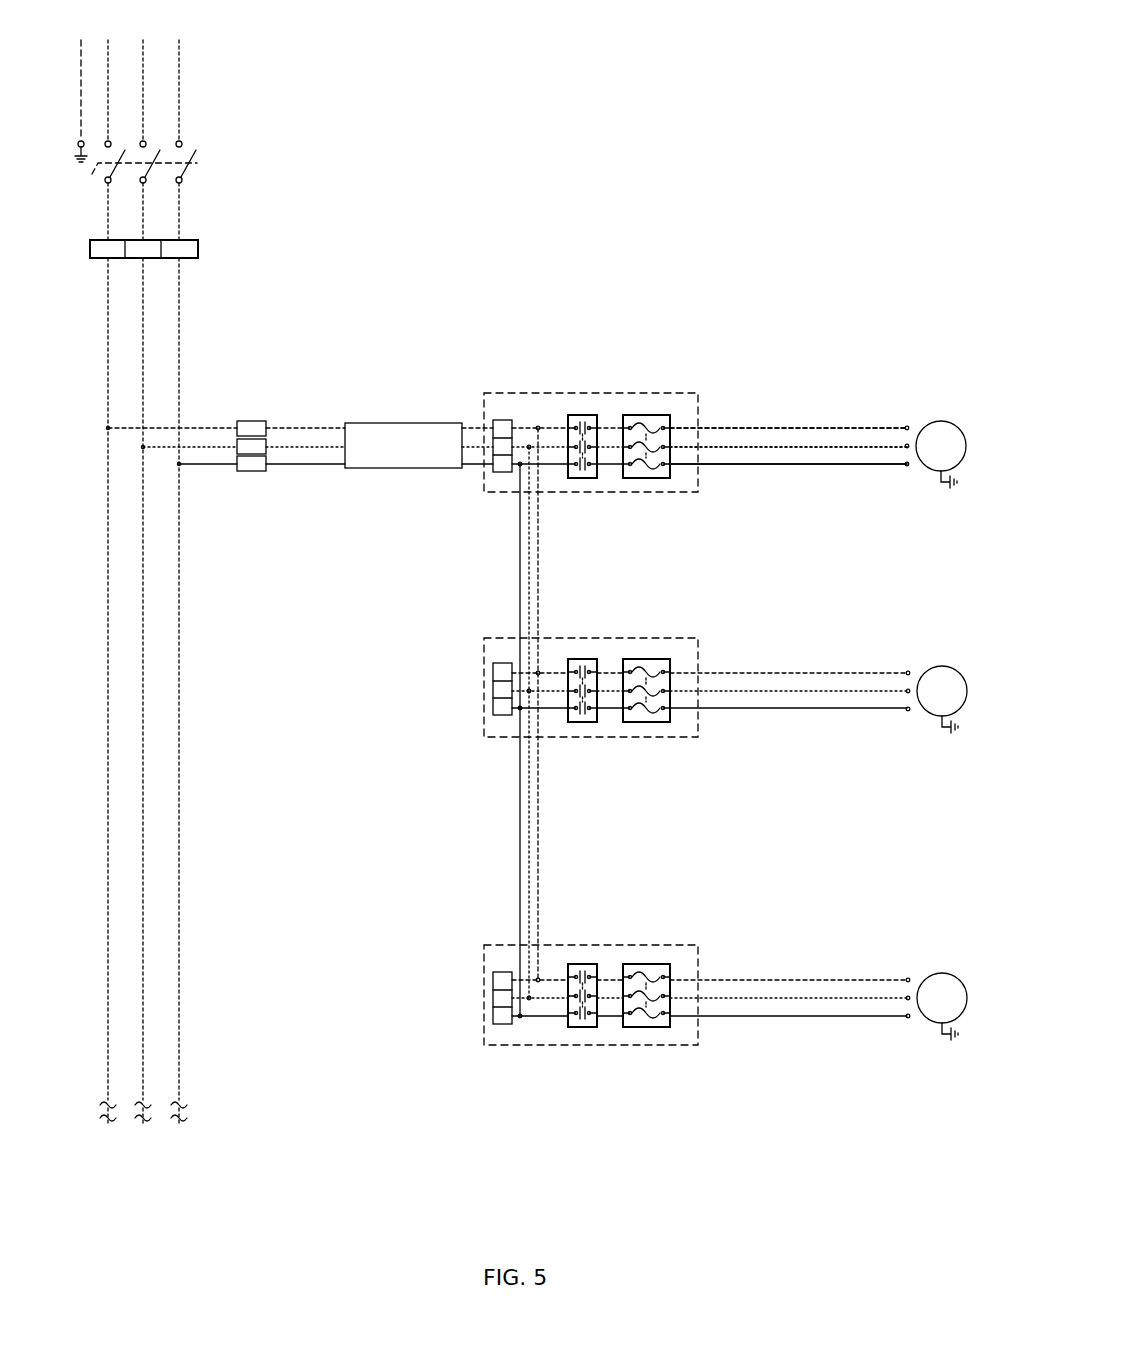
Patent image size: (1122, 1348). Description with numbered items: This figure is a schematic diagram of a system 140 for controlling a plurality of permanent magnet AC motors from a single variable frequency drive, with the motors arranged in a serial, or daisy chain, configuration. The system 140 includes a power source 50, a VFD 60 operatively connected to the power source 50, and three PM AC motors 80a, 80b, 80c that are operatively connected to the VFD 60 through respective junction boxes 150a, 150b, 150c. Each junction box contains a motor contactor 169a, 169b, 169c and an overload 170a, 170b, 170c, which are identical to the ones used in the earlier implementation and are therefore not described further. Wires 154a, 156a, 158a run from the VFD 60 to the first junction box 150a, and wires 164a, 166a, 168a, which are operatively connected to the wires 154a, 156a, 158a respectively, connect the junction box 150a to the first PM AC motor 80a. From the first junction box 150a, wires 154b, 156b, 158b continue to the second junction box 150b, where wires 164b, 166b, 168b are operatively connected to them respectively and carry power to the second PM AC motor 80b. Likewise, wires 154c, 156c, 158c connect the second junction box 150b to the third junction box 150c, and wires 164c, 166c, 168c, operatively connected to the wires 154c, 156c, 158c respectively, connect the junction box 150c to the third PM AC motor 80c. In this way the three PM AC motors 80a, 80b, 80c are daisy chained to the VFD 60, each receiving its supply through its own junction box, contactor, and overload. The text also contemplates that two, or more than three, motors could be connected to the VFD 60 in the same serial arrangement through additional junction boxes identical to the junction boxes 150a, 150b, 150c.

The system 140 is at (830, 76).
The power source 50 is at (203, 133).
The VFD 60 is at (399, 420).
The wire 154a is at (470, 420).
The wire 156a is at (478, 468).
The wire 158a is at (466, 468).
The wire 154b is at (540, 555).
The wire 156b is at (531, 522).
The wire 158b is at (519, 596).
The wire 154c is at (540, 843).
The wire 156c is at (531, 810).
The wire 158c is at (519, 868).
The junction box 150a is at (605, 402).
The junction box 150b is at (606, 660).
The junction box 150c is at (608, 967).
The motor contactor 169a is at (572, 414).
The motor contactor 169b is at (568, 658).
The motor contactor 169c is at (568, 963).
The overload 170a is at (629, 414).
The overload 170b is at (632, 658).
The overload 170c is at (632, 963).
The wire 164a is at (832, 427).
The wire 166a is at (807, 446).
The wire 168a is at (768, 463).
The wire 164b is at (847, 672).
The wire 166b is at (822, 690).
The wire 168b is at (783, 707).
The wire 164c is at (847, 979).
The wire 166c is at (822, 997).
The wire 168c is at (783, 1015).
The PM AC motor 80a is at (943, 421).
The PM AC motor 80b is at (943, 666).
The PM AC motor 80c is at (943, 973).